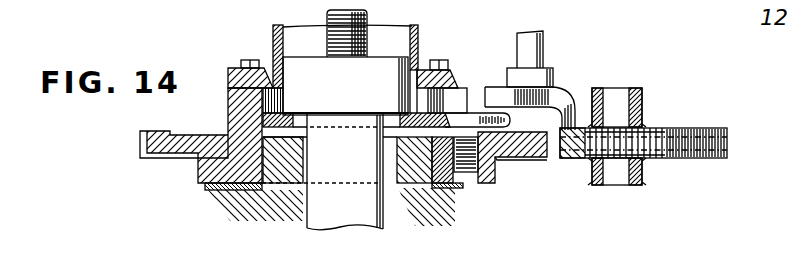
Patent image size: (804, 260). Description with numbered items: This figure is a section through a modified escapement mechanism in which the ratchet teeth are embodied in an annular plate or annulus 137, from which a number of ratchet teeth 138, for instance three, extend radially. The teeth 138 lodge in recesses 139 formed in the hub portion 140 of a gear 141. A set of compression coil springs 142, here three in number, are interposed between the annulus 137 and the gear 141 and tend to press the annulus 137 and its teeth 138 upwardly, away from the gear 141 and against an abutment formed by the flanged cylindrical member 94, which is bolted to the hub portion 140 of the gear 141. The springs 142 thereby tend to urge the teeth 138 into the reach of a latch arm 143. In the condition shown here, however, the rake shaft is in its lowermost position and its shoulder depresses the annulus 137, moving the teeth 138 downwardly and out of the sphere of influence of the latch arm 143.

The flanged cylindrical member 94 is at (273, 62).
The annulus 137 is at (297, 128).
The ratchet teeth 138 is at (488, 122).
The recesses 139 is at (455, 87).
The hub portion 140 is at (228, 114).
The gear 141 is at (152, 160).
The compression coil springs 142 is at (469, 166).
The latch arm 143 is at (537, 97).